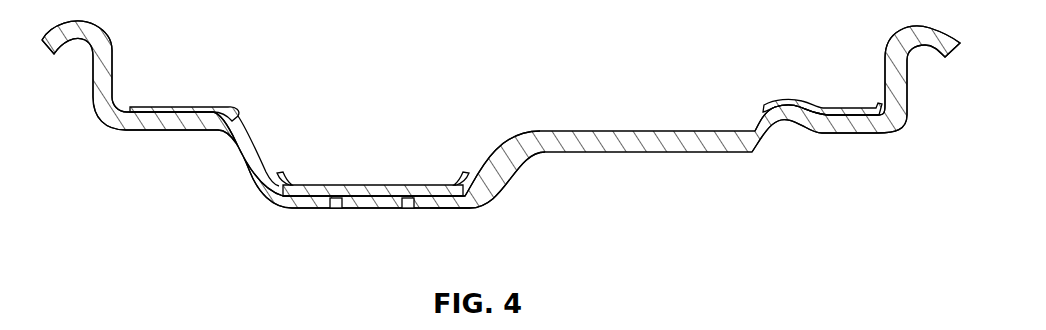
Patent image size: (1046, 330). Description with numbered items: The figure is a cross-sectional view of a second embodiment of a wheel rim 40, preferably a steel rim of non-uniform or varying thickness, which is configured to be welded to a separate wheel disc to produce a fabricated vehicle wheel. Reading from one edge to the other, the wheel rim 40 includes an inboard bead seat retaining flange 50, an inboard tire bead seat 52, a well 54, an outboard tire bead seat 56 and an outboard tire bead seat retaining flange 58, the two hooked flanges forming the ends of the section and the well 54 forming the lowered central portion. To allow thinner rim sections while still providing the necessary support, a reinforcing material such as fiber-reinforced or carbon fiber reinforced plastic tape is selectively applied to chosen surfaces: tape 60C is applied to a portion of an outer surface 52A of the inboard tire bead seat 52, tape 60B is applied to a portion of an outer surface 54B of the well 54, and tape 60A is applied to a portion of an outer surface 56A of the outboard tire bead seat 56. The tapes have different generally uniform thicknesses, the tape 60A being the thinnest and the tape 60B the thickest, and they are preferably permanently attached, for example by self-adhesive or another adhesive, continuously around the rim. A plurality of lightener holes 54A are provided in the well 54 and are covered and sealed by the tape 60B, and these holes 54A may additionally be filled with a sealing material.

The wheel rim 40 is at (566, 127).
The inboard bead seat retaining flange 50 is at (909, 78).
The inboard tire bead seat 52 is at (840, 133).
The outer surface of the inboard tire bead seat 52A is at (780, 123).
The well 54 is at (494, 193).
The holes 54A is at (335, 208).
The outer surface of the well 54B is at (440, 208).
The outboard tire bead seat 56 is at (245, 178).
The outer surface of the outboard tire bead seat 56A is at (157, 113).
The outboard tire bead seat retaining flange 58 is at (91, 84).
The reinforcing tape 60A is at (173, 106).
The reinforcing tape 60B is at (350, 184).
The reinforcing tape 60C is at (790, 99).